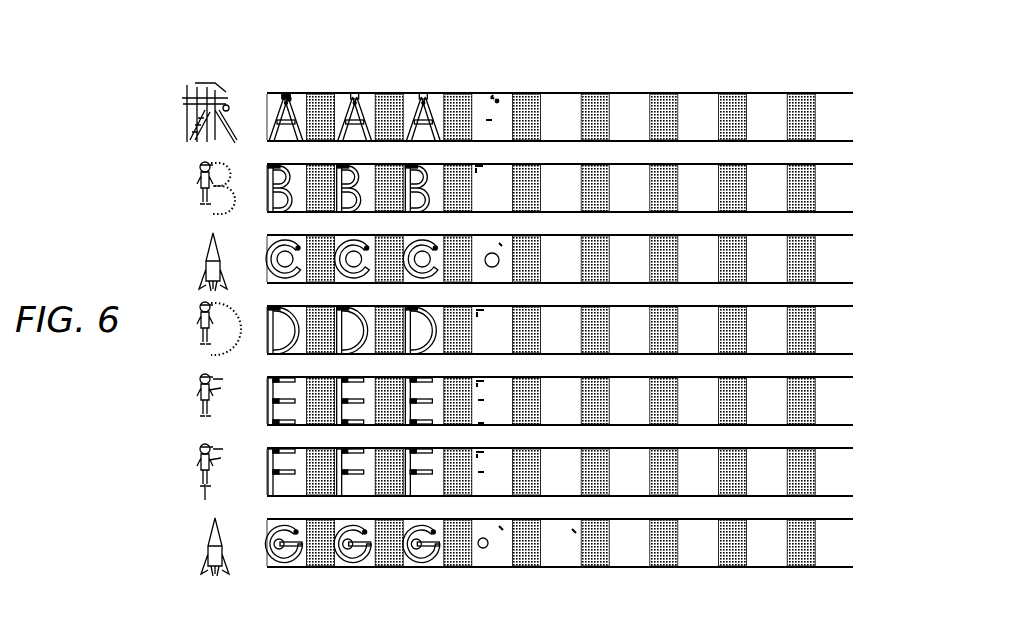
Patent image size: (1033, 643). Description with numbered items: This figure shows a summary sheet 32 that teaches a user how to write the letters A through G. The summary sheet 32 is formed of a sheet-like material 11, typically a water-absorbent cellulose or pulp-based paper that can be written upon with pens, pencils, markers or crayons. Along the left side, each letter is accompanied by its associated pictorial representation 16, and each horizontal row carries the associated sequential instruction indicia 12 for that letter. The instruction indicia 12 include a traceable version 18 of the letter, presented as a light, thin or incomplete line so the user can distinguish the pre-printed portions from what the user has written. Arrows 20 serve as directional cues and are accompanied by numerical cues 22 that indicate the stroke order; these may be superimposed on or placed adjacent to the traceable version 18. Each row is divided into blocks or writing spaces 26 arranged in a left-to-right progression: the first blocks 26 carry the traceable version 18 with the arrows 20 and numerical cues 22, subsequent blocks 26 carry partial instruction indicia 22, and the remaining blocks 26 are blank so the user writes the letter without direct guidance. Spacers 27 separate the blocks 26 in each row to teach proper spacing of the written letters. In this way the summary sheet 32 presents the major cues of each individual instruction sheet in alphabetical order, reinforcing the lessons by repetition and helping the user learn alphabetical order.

The sheet-like material 11 is at (662, 617).
The sequential instruction indicia 12 is at (407, 320).
The pictorial representation 16 is at (188, 523).
The traceable version 18 is at (285, 466).
The arrows 20 is at (498, 93).
The numerical cues 22 is at (493, 88).
The blocks/writing spaces 26 is at (698, 388).
The spacers 27 is at (597, 526).
The summary sheet 32 is at (425, 617).